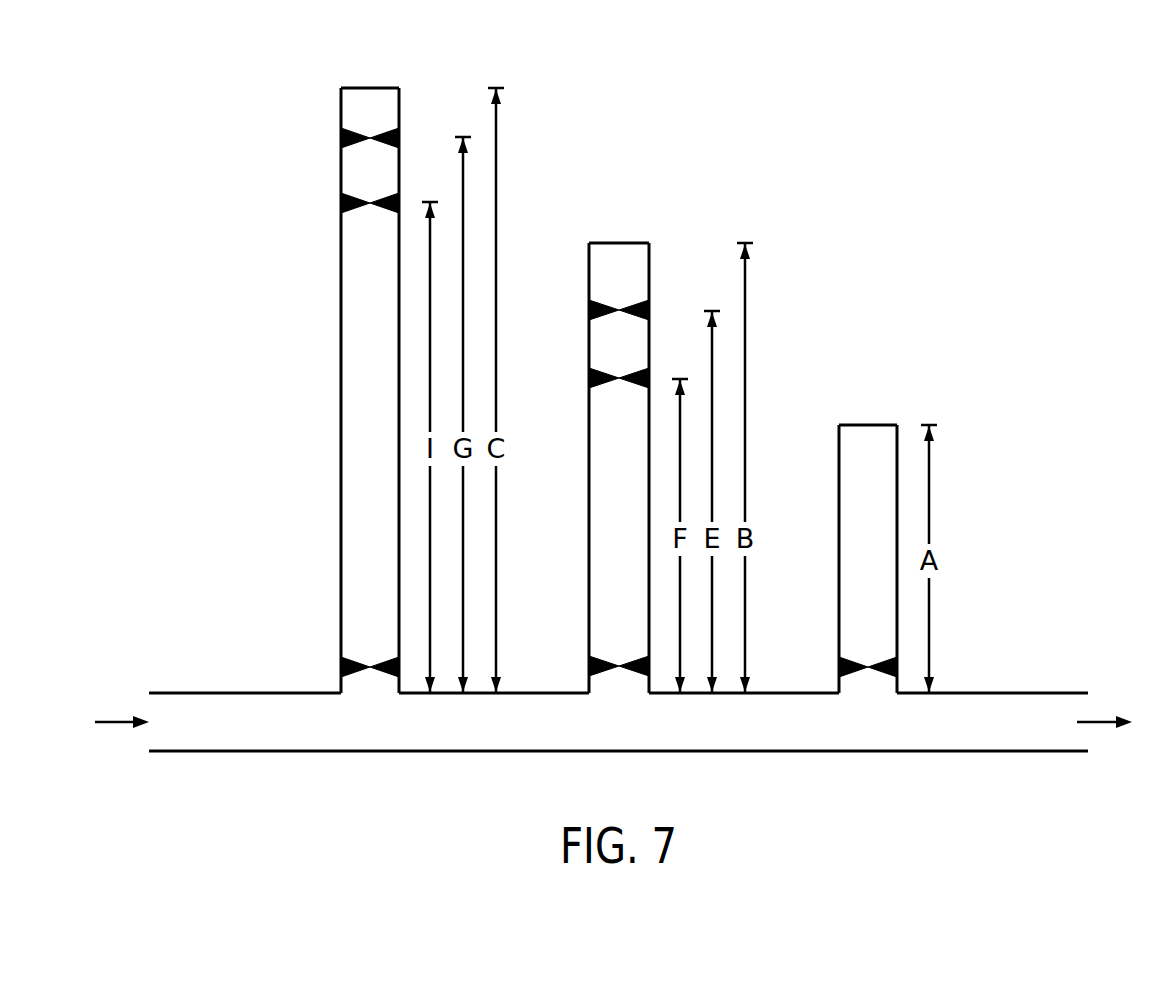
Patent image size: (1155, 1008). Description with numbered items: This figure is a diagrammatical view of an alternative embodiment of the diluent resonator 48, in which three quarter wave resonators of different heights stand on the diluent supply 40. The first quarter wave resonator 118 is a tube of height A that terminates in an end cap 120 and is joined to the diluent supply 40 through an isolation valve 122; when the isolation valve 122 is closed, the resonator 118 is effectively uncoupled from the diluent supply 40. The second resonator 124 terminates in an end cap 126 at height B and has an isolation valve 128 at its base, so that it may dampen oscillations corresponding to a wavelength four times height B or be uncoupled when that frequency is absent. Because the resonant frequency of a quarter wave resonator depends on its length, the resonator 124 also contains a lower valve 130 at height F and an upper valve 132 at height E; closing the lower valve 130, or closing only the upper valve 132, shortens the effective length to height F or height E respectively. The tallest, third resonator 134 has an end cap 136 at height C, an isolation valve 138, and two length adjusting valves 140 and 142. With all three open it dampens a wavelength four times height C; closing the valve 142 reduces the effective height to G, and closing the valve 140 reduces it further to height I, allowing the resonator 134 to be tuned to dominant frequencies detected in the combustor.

The diluent supply 40 is at (958, 728).
The diluent resonator 48 is at (799, 240).
The quarter wave resonator 118 is at (839, 471).
The end cap 120 is at (868, 425).
The isolation valve 122 is at (853, 655).
The resonator 124 is at (589, 495).
The end cap 126 is at (620, 243).
The isolation valve 128 is at (605, 660).
The lower valve 130 is at (606, 390).
The upper valve 132 is at (606, 322).
The third resonator 134 is at (340, 390).
The end cap 136 is at (380, 88).
The isolation valve 138 is at (357, 657).
The length adjusting valve 140 is at (357, 212).
The length adjusting valve 142 is at (358, 128).